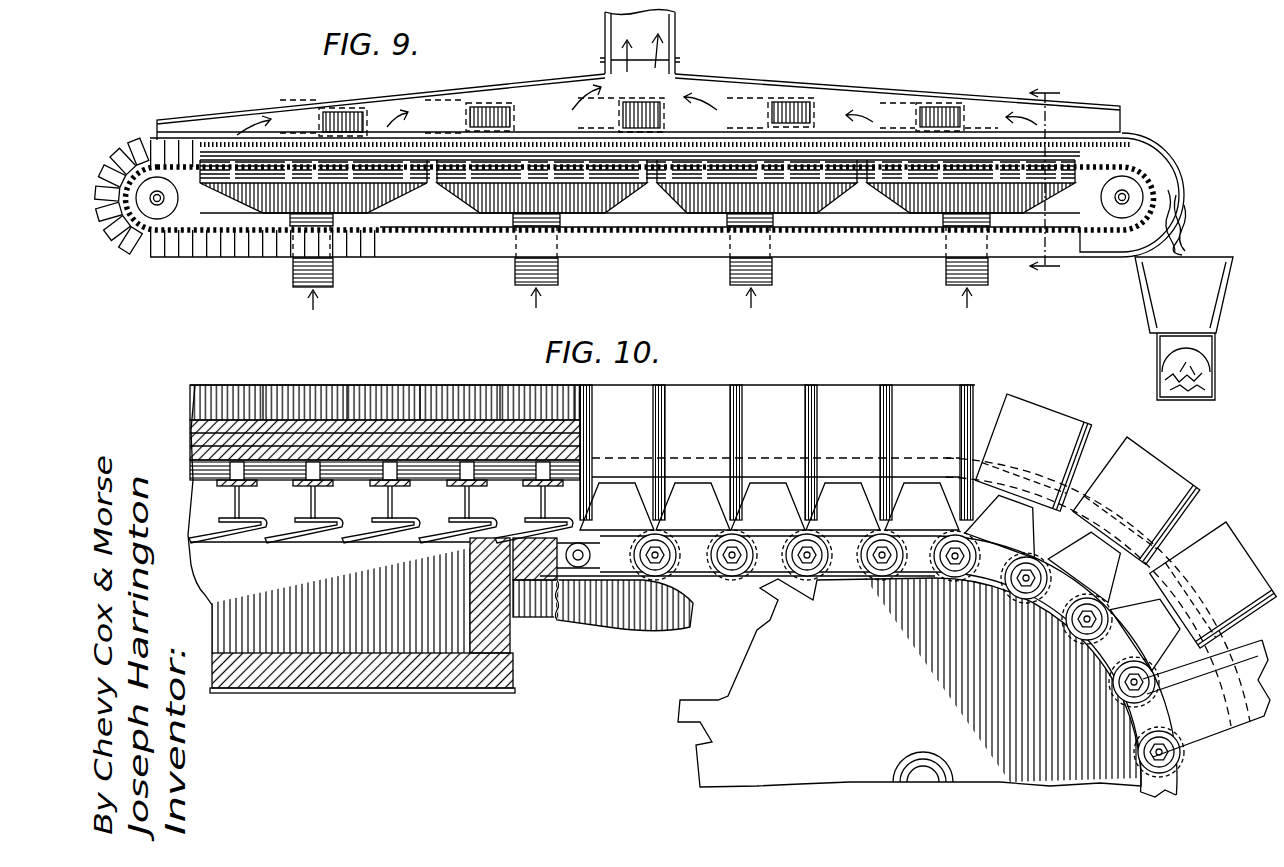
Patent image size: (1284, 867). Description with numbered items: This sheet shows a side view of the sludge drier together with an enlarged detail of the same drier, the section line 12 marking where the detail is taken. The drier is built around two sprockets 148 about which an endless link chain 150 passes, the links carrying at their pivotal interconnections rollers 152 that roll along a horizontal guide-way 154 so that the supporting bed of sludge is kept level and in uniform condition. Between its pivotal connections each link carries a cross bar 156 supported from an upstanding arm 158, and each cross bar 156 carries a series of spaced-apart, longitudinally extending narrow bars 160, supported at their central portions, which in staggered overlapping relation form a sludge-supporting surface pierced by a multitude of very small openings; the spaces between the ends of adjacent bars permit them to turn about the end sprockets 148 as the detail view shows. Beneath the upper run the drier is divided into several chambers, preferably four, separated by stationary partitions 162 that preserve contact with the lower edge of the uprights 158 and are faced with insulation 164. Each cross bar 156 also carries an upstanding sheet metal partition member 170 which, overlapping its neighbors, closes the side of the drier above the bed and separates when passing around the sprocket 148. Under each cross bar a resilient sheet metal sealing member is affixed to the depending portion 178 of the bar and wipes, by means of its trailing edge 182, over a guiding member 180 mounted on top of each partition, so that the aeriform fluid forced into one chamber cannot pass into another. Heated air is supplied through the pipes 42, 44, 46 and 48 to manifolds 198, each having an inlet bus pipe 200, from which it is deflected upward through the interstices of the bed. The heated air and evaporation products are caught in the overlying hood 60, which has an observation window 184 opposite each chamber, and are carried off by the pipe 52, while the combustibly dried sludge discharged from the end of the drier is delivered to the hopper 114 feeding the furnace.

In FIG. 9, the section line 12- 12 is at (1045, 180).
In FIG. 9, the heated air pipe 42 is at (334, 275).
In FIG. 9, the heated air pipe 44 is at (512, 275).
In FIG. 9, the heated air pipe 46 is at (774, 268).
In FIG. 9, the heated air pipe 48 is at (946, 267).
In FIG. 9, the pipe 52 is at (662, 21).
In FIG. 9, the hood 60 is at (848, 87).
In FIG. 9, the hopper 114 is at (1184, 295).
In FIG. 9, the sprocket 148 is at (1128, 178).
In FIG. 10, the sprocket 148 is at (733, 764).
In FIG. 9, the endless link chain 150 is at (232, 258).
In FIG. 10, the endless link chain 150 is at (765, 566).
In FIG. 10, the roller 152 is at (867, 575).
In FIG. 10, the horizontal guide-way 154 is at (617, 610).
In FIG. 10, the cross bar 156 is at (457, 495).
In FIG. 10, the upstanding arm 158 is at (920, 497).
In FIG. 10, the sludge supporting bar 160 is at (347, 467).
In FIG. 10, the partition 162 is at (513, 642).
In FIG. 10, the insulation facing 164 is at (483, 609).
In FIG. 10, the upstanding partition member 170 is at (837, 403).
In FIG. 10, the depending portion 178 is at (480, 518).
In FIG. 10, the guiding member 180 is at (470, 578).
In FIG. 10, the trailing edge 182 is at (427, 543).
In FIG. 9, the observation window 184 is at (323, 110).
In FIG. 9, the manifold 198 is at (462, 203).
In FIG. 9, the inlet bus pipe 200 is at (362, 222).